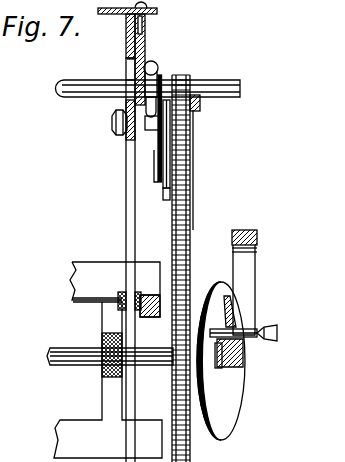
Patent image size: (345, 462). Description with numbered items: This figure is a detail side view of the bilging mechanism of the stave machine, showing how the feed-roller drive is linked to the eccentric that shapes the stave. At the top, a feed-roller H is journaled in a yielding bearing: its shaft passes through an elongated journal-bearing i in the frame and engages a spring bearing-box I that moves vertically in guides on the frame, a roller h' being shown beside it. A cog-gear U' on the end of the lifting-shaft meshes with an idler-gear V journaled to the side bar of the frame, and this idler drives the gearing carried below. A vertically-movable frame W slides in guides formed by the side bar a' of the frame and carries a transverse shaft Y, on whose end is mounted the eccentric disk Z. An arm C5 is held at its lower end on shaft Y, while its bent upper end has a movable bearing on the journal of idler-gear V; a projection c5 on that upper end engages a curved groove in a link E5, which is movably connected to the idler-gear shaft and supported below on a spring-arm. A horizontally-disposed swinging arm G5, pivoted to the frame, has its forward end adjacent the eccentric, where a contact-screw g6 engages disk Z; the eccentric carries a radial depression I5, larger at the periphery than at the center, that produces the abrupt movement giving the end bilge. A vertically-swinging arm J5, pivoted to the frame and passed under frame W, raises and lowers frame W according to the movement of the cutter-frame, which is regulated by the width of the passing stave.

The spring bearing-box I is at (146, 40).
The elongated journal-bearing i is at (126, 70).
The roller h' is at (168, 82).
The feed-roller H is at (242, 91).
The cog-gear U' is at (179, 115).
The arm C5 is at (160, 150).
The idler-gear V is at (196, 205).
The link E5 is at (171, 200).
The side bar a' is at (117, 271).
The lug c5 is at (175, 224).
The swinging arm G5 is at (248, 255).
The vertically-movable frame W is at (115, 289).
The contact-screw g6 is at (263, 327).
The vertically-swinging arm J5 is at (143, 318).
The radial depression I5 is at (242, 351).
The transverse shaft Y is at (110, 363).
The eccentric disk Z is at (228, 398).